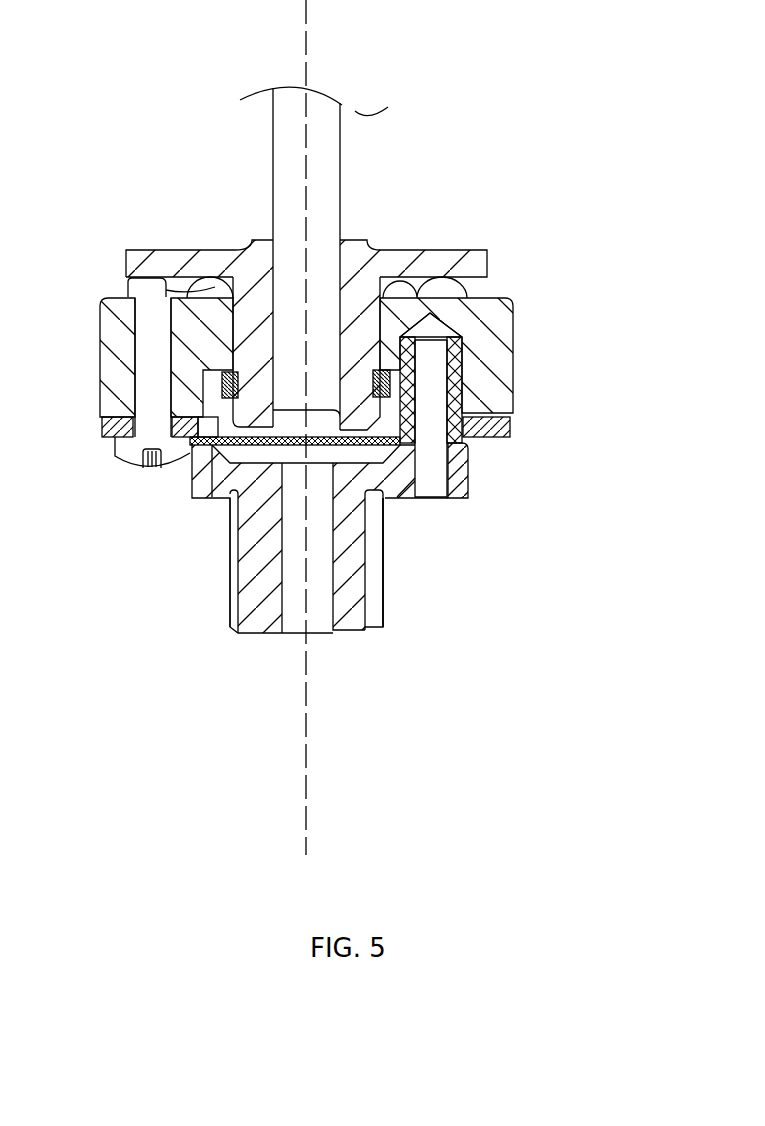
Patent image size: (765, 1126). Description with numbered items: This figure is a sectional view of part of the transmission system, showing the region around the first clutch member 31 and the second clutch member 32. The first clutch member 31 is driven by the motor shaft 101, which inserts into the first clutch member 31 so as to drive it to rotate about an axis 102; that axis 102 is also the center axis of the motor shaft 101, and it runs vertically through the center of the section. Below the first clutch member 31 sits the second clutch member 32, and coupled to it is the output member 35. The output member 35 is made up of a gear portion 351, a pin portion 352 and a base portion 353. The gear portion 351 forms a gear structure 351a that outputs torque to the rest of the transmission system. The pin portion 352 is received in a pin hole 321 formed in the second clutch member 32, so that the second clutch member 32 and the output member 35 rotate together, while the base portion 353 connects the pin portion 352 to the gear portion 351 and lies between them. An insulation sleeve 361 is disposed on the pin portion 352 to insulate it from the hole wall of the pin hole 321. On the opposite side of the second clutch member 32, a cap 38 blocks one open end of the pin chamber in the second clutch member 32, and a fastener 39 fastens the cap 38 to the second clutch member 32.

The motor shaft 101 is at (288, 182).
The axis 102 is at (300, 55).
The first clutch member 31 is at (250, 240).
The second clutch member 32 is at (102, 313).
The pin hole 321 is at (440, 326).
The output member 35 is at (302, 535).
The gear portion 351 is at (356, 568).
The gear structure 351a is at (378, 593).
The pin portion 352 is at (431, 431).
The base portion 353 is at (469, 485).
The insulation sleeve 361 is at (460, 357).
The cap 38 is at (102, 428).
The fastener 39 is at (146, 365).